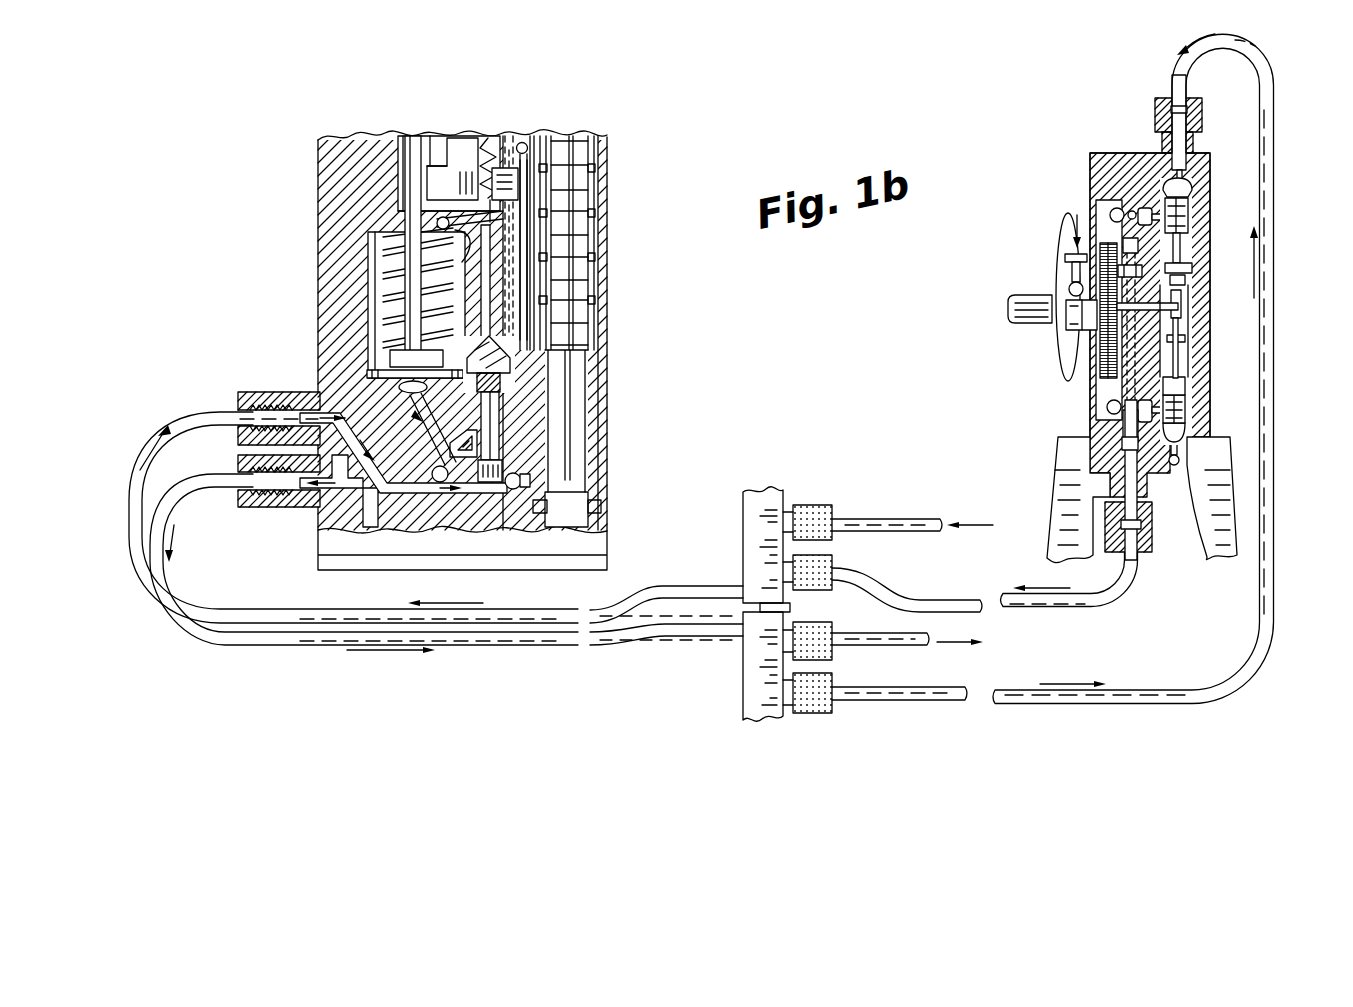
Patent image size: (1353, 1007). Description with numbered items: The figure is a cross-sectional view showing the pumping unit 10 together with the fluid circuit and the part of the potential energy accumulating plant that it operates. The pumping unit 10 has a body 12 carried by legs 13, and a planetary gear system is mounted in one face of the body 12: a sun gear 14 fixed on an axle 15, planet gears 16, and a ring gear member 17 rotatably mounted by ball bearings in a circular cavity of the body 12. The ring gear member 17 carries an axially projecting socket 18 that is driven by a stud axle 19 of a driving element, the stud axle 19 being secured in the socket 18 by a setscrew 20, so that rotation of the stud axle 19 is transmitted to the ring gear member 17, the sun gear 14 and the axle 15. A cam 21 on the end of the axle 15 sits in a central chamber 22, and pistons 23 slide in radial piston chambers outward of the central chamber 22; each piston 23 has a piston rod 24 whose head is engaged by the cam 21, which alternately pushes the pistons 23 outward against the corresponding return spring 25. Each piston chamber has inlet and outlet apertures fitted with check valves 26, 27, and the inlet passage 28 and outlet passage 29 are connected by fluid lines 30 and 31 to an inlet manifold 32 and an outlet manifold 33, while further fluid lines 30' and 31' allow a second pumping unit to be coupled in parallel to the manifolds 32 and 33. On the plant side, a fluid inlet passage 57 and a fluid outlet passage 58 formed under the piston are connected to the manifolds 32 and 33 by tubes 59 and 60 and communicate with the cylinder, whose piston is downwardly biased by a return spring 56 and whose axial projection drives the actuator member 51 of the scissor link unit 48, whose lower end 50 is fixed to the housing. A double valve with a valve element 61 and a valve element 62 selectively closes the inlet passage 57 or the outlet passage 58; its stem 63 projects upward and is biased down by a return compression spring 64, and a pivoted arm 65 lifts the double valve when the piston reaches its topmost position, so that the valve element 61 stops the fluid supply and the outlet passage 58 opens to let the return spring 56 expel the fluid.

The pumping unit 10 is at (1093, 137).
The body 12 is at (1108, 178).
The legs 13 is at (1080, 450).
The sun gear 14 is at (1103, 332).
The axle 15 is at (1178, 309).
The planet gears 16 is at (1075, 232).
The ring gear member 17 is at (1100, 410).
The socket 18 is at (1075, 314).
The stud axle 19 is at (1028, 300).
The setscrew 20 is at (1070, 256).
The cam 21 is at (1183, 300).
The central chamber 22 is at (1190, 326).
The pistons 23 is at (1190, 216).
The piston rod 24 is at (1190, 248).
The return spring 25 is at (1190, 270).
The check valve 26 is at (1190, 183).
The check valve 27 is at (1141, 206).
The inlet passage 28 is at (1207, 548).
The outlet passage 29 is at (1125, 466).
The fluid line 30 is at (1133, 369).
The fluid line 30' is at (907, 653).
The fluid line 31 is at (1069, 603).
The fluid line 31' is at (912, 546).
The inlet manifold 32 is at (760, 690).
The outlet manifold 33 is at (762, 518).
The scissor link unit 48 is at (588, 187).
The lower end 50 is at (572, 500).
The actuator member 51 is at (528, 330).
The return spring 56 is at (390, 298).
The fluid inlet passage 57 is at (410, 410).
The fluid outlet passage 58 is at (318, 528).
The tube 59 is at (283, 612).
The tube 60 is at (341, 645).
The valve element 61 is at (484, 482).
The valve element 62 is at (503, 378).
The stem 63 is at (492, 264).
The return compression spring 64 is at (483, 143).
The arm 65 is at (512, 222).